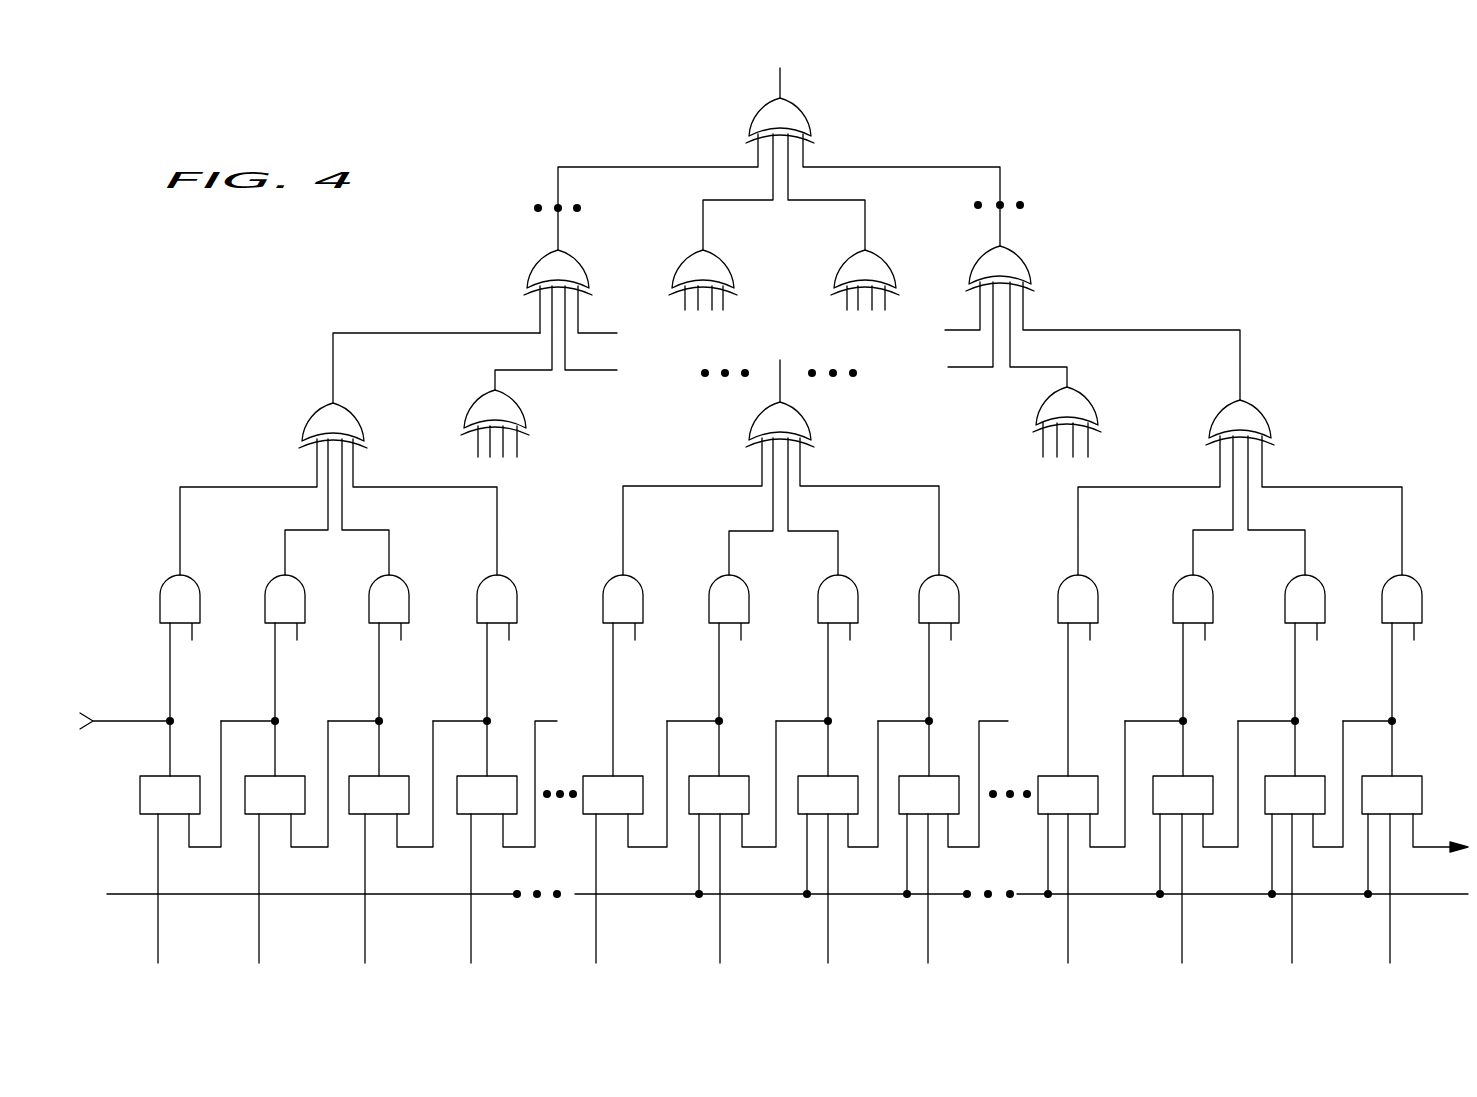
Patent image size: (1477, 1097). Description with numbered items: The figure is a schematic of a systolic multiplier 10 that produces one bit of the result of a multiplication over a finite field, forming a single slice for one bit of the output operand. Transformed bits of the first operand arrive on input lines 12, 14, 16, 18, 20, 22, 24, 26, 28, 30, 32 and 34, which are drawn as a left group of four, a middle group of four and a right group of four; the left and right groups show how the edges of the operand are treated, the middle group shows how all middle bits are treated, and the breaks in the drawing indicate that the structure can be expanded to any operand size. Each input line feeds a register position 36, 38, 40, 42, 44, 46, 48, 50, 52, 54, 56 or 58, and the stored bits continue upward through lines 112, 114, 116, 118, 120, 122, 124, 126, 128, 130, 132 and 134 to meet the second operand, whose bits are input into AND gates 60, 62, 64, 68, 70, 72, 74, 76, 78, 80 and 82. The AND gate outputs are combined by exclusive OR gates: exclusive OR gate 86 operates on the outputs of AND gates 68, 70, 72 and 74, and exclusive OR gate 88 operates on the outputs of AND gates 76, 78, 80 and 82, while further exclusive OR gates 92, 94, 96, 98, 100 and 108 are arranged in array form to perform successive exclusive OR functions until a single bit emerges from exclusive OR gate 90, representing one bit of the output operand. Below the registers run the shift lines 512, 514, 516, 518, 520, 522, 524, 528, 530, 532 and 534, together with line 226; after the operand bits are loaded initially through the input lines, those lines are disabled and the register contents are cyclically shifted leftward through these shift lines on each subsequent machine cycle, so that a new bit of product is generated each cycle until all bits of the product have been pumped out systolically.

The systolic multiplier 10 is at (322, 331).
The input line 12 is at (160, 932).
The input line 14 is at (261, 937).
The input line 16 is at (367, 939).
The input line 18 is at (473, 937).
The input line 20 is at (598, 932).
The input line 22 is at (722, 932).
The input line 24 is at (830, 934).
The input line 26 is at (930, 938).
The input line 28 is at (1070, 936).
The input line 30 is at (1184, 937).
The input line 32 is at (1294, 937).
The input line 34 is at (1392, 937).
The register position 36 is at (182, 772).
The register position 38 is at (287, 772).
The register position 40 is at (395, 772).
The register position 42 is at (500, 772).
The register position 44 is at (630, 772).
The register position 46 is at (738, 772).
The register position 48 is at (845, 772).
The register position 50 is at (945, 772).
The register position 52 is at (1085, 772).
The register position 54 is at (1200, 772).
The register position 56 is at (1310, 772).
The register position 58 is at (1412, 772).
The AND gate 60 is at (192, 582).
The AND gate 62 is at (297, 582).
The AND gate 64 is at (401, 582).
The AND gate 68 is at (637, 582).
The AND gate 70 is at (742, 582).
The AND gate 72 is at (851, 582).
The AND gate 74 is at (952, 582).
The AND gate 76 is at (1090, 580).
The AND gate 78 is at (1205, 580).
The AND gate 80 is at (1318, 580).
The AND gate 82 is at (1415, 580).
The exclusive OR gate 86 is at (798, 418).
The exclusive OR gate 88 is at (317, 417).
The exclusive OR gate 90 is at (802, 115).
The exclusive OR gate 92 is at (520, 417).
The exclusive OR gate 94 is at (578, 262).
The exclusive OR gate 96 is at (722, 265).
The exclusive OR gate 98 is at (887, 262).
The exclusive OR gate 100 is at (1022, 262).
The OR gate 108 is at (1085, 402).
The line 112 is at (173, 693).
The line 114 is at (278, 693).
The line 116 is at (382, 693).
The line 118 is at (490, 693).
The line 120 is at (616, 690).
The line 122 is at (722, 690).
The line 124 is at (831, 690).
The line 126 is at (932, 690).
The line 128 is at (1071, 690).
The line 130 is at (1186, 690).
The line 132 is at (1298, 690).
The line 134 is at (1395, 690).
The carry line 226 is at (968, 850).
The line 512 is at (212, 848).
The line 514 is at (317, 848).
The line 516 is at (417, 848).
The line 518 is at (518, 848).
The line 520 is at (650, 850).
The line 522 is at (762, 850).
The line 524 is at (865, 850).
The line 528 is at (1113, 850).
The line 530 is at (1222, 850).
The line 532 is at (1328, 850).
The line 534 is at (123, 720).